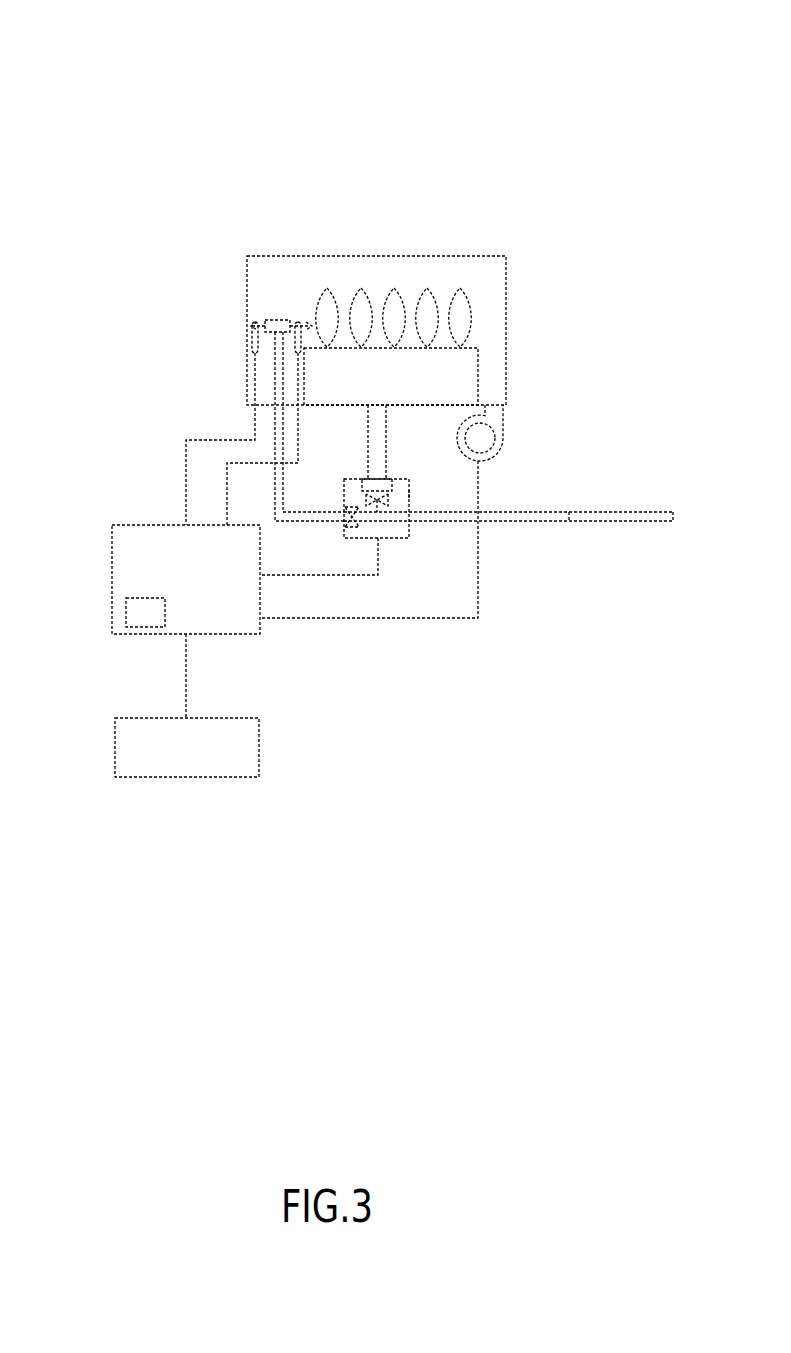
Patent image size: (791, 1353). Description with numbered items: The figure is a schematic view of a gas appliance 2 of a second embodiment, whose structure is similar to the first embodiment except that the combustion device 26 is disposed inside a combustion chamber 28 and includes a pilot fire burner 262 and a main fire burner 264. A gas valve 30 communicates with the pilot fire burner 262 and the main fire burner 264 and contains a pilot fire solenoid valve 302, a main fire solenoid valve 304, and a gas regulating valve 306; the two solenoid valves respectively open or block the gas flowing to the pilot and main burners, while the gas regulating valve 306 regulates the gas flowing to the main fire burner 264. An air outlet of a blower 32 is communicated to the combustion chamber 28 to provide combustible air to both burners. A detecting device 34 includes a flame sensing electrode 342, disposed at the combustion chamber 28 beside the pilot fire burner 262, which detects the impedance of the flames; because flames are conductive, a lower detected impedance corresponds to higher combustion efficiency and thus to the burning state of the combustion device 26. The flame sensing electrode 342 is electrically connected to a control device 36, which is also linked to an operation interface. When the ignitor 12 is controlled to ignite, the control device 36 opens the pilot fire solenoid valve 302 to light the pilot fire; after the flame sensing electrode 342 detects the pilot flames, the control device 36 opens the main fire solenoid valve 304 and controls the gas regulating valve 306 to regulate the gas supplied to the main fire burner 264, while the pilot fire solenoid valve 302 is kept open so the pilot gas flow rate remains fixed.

The gas appliance 2 is at (448, 128).
The ignitor 12 is at (298, 318).
The combustion device 26 is at (460, 337).
The pilot fire burner 262 is at (278, 318).
The main fire burner 264 is at (476, 376).
The combustion chamber 28 is at (492, 274).
The gas valve 30 is at (466, 556).
The pilot fire solenoid valve 302 is at (345, 524).
The main fire solenoid valve 304 is at (410, 496).
The gas regulating valve 306 is at (394, 479).
The blower 32 is at (506, 438).
The detecting device 34 is at (188, 399).
The flame sensing electrode 342 is at (247, 340).
The control device 36 is at (108, 534).